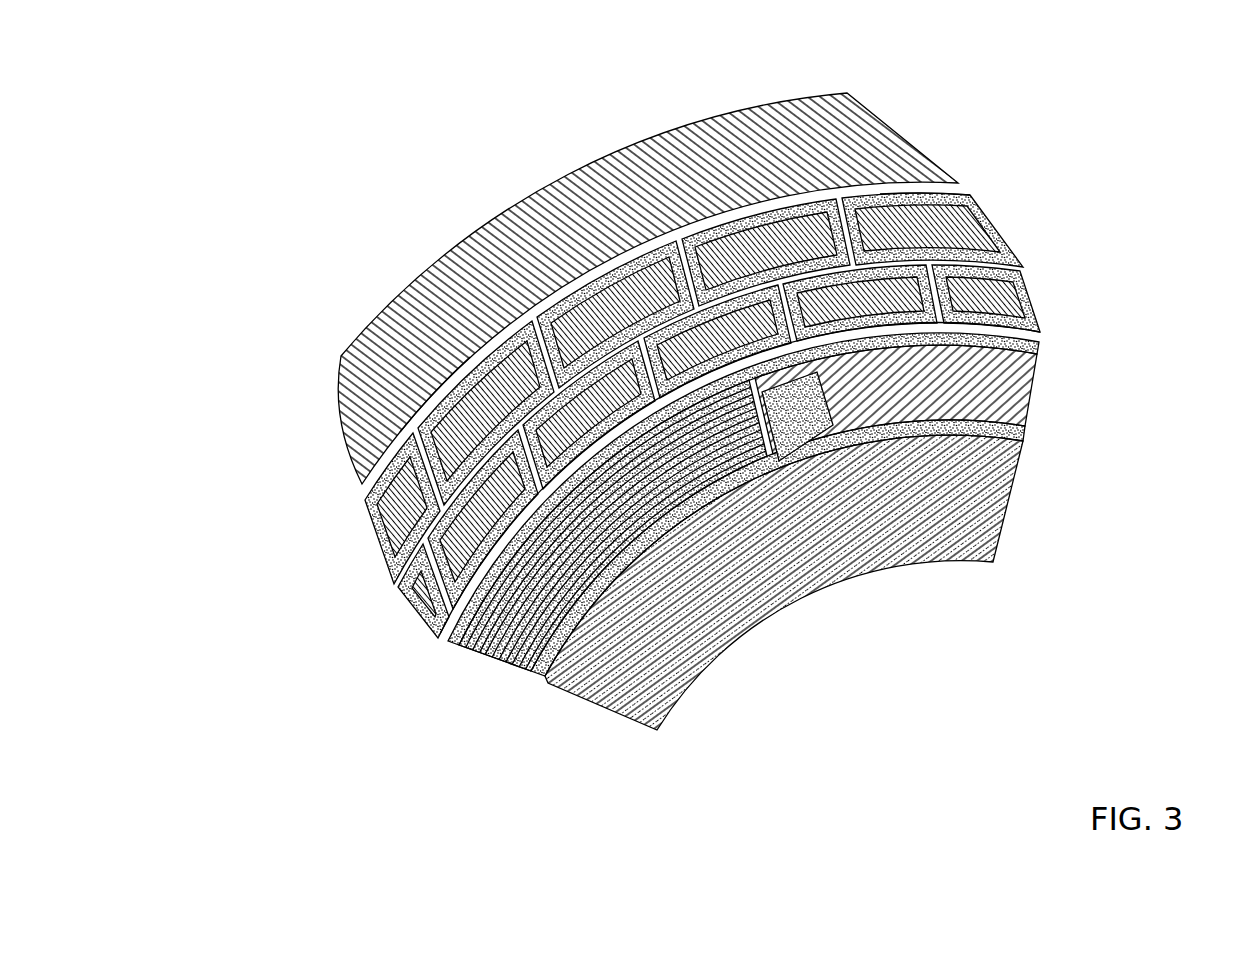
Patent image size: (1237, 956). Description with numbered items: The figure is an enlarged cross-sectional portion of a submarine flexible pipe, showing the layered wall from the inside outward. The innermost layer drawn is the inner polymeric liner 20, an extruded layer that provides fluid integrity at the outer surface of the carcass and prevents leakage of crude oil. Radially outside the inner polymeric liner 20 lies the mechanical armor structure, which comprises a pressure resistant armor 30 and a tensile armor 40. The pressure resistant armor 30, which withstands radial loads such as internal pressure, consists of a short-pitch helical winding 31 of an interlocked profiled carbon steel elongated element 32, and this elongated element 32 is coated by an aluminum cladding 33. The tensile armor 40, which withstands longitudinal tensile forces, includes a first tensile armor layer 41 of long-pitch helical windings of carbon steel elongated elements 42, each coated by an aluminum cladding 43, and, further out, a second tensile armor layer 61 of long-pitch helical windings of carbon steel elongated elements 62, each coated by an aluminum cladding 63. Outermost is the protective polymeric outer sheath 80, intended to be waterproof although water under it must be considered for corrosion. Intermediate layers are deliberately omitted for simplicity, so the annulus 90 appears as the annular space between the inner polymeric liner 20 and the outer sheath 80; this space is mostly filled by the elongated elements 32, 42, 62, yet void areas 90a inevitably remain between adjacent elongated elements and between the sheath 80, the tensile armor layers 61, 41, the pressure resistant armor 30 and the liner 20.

The inner polymeric liner 20 is at (890, 477).
The pressure resistant armor 30 is at (824, 644).
The short-pitch helical winding 31 is at (521, 668).
The interlocked profiled carbon steel elongated element 32 is at (663, 490).
The aluminum cladding 33 is at (790, 432).
The tensile armor 40 is at (700, 381).
The first tensile armor layer 41 is at (1047, 338).
The carbon steel elongated element 42 is at (721, 330).
The aluminum cladding 43 is at (632, 262).
The second tensile armor layer 61 is at (972, 192).
The carbon steel elongated element 62 is at (423, 375).
The aluminum cladding 63 is at (423, 490).
The protective polymeric outer sheath 80 is at (480, 280).
The annulus 90 is at (300, 553).
The void areas 90a is at (663, 333).